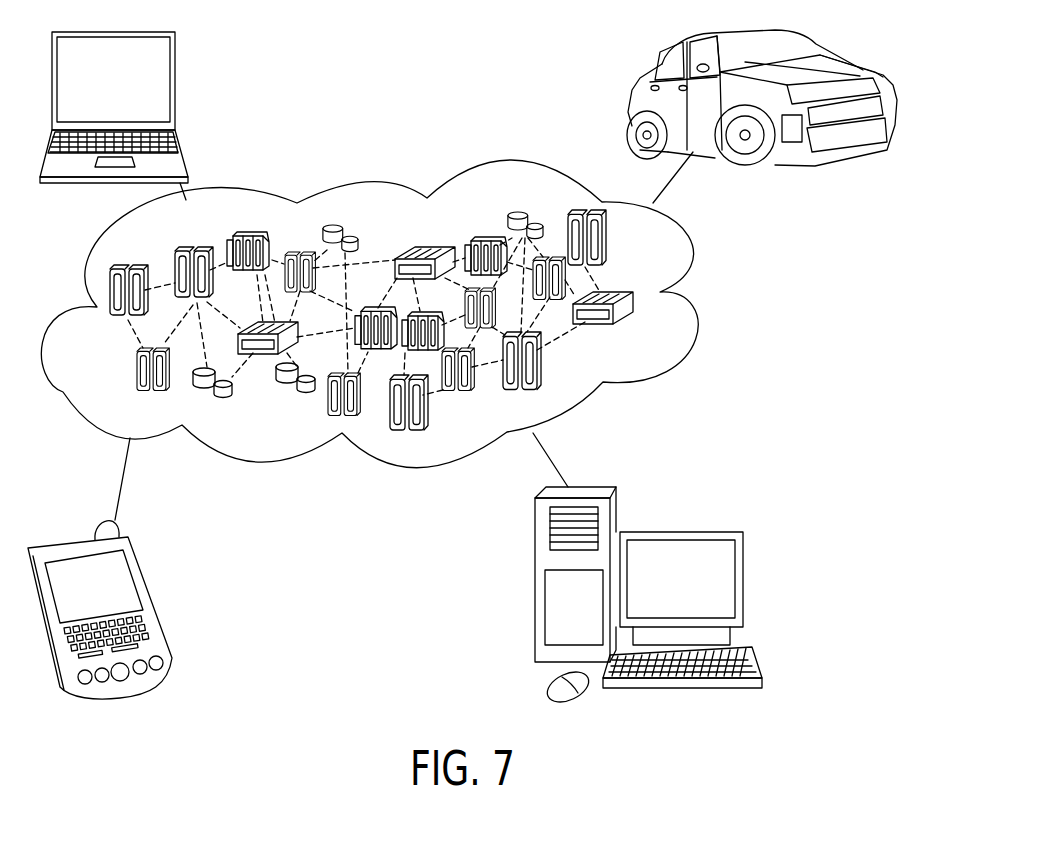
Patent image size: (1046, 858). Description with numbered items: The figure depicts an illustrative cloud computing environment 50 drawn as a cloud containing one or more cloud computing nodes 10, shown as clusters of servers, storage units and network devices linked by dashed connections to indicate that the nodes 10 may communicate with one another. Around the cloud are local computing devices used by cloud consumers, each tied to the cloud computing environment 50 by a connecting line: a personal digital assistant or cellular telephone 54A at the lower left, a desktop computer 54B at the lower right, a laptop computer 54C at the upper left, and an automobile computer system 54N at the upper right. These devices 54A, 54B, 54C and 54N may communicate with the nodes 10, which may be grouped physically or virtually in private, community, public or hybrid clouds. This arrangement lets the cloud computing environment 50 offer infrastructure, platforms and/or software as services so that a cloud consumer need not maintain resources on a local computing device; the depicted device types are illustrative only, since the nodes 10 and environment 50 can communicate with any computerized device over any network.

The cloud computing nodes 10 is at (660, 349).
The cloud computing environment 50 is at (698, 243).
The personal digital assistant (PDA) or cellular telephone 54A is at (145, 578).
The desktop computer 54B is at (745, 577).
The laptop computer 54C is at (177, 82).
The automobile computer system 54N is at (812, 50).